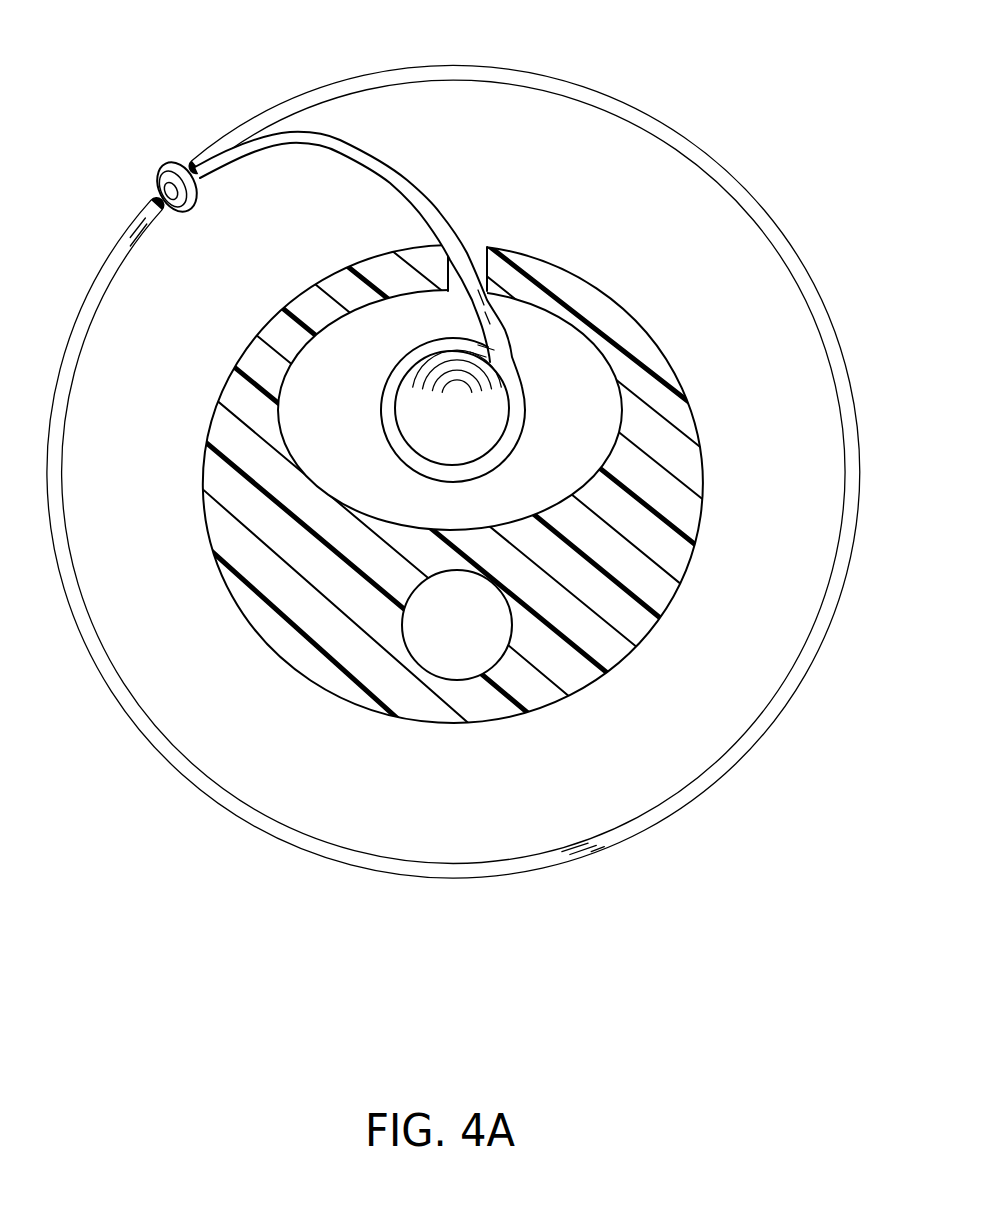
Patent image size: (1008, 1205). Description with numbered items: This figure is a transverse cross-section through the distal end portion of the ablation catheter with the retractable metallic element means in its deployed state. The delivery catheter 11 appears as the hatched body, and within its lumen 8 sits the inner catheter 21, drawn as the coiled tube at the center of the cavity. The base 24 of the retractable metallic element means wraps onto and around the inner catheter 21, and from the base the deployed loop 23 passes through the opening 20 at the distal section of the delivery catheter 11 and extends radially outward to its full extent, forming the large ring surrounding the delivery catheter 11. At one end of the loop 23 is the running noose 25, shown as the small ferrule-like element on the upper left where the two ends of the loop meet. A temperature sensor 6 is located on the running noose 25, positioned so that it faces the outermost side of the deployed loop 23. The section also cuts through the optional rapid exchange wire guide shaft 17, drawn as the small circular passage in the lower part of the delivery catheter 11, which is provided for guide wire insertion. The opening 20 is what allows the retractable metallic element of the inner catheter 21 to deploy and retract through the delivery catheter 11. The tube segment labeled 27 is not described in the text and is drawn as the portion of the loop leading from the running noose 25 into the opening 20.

The temperature sensor 6 is at (172, 162).
The lumen 8 is at (570, 350).
The delivery catheter 11 is at (703, 478).
The rapid exchange wire guide shaft 17 is at (443, 663).
The opening 20 is at (473, 250).
The inner catheter 21 is at (432, 443).
The loop 23 is at (850, 397).
The base 24 is at (392, 400).
The running noose 25 is at (158, 180).
The tube segment 27 is at (230, 122).